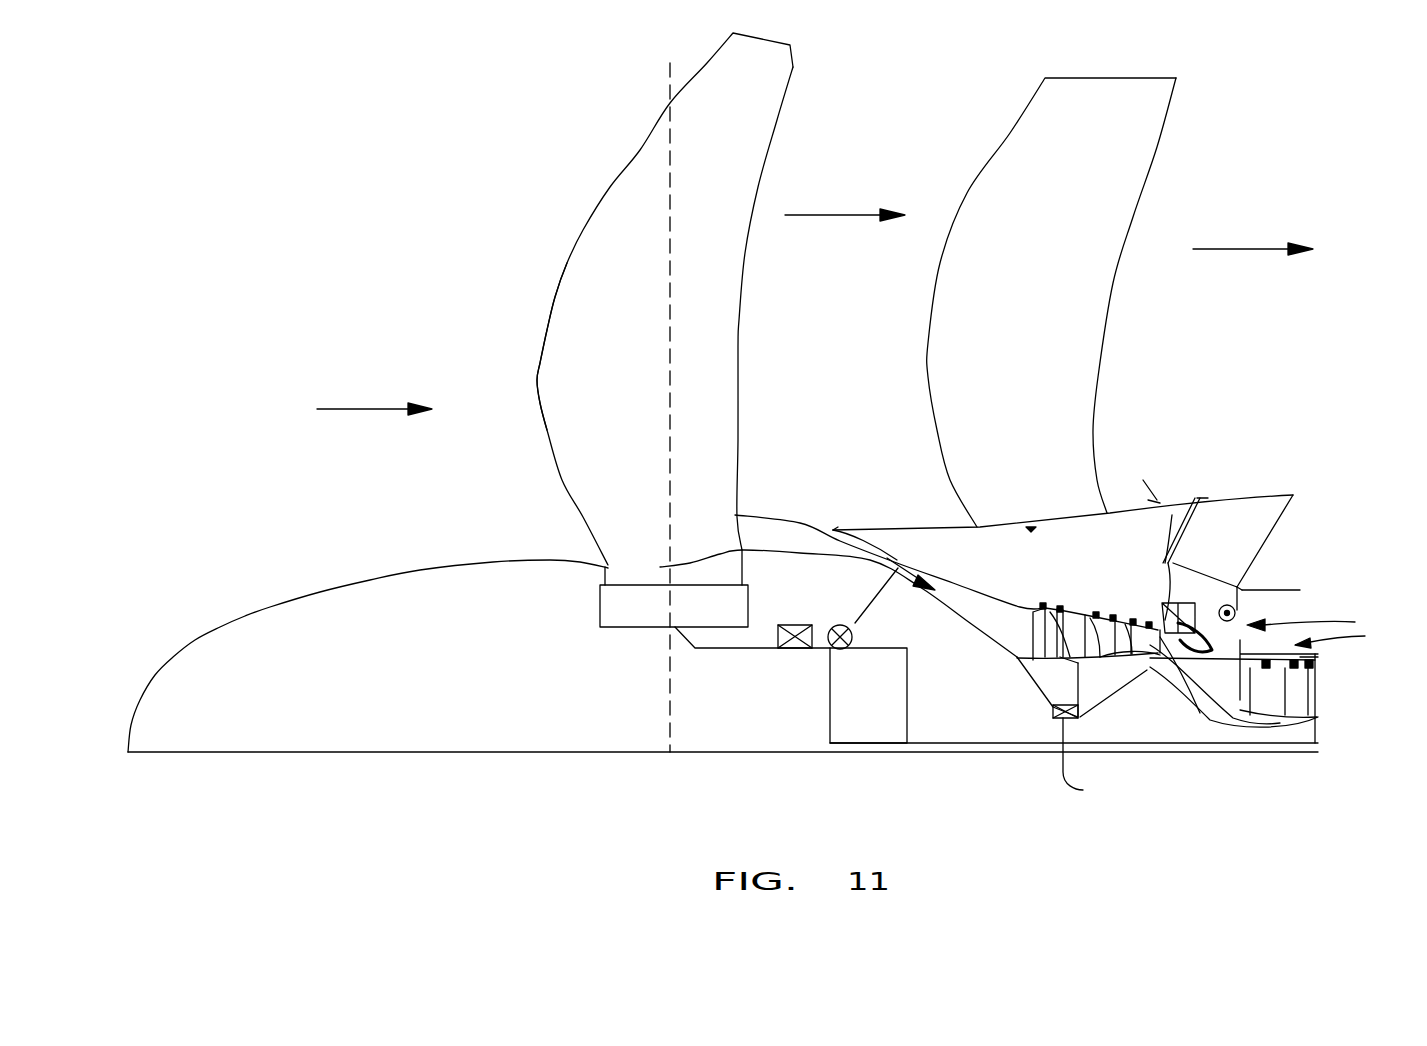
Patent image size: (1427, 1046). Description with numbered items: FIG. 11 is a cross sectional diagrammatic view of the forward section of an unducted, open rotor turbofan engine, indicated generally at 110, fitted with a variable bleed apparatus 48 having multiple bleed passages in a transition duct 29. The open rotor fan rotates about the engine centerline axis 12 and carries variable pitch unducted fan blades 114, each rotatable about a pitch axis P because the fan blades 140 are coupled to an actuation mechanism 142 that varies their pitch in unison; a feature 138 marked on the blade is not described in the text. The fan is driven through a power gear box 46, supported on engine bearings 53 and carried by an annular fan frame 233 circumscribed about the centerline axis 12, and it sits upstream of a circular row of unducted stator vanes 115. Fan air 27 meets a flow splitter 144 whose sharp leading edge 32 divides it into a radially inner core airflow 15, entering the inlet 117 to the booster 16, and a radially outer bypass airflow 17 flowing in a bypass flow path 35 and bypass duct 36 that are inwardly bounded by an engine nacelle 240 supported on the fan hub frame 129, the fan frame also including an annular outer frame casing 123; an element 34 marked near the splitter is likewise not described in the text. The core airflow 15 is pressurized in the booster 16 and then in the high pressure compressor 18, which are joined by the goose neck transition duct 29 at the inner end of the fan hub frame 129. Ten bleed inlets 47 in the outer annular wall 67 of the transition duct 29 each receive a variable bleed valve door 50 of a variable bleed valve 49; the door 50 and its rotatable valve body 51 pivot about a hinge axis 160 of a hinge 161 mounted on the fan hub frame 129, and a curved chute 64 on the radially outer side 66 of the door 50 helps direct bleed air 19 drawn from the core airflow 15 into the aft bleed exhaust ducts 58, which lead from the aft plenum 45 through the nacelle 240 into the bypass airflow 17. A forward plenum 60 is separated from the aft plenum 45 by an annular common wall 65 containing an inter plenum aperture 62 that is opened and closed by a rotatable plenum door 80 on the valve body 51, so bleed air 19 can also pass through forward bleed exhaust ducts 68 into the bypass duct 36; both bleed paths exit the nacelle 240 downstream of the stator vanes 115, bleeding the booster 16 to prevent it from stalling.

The engine centerline axis 12 is at (840, 752).
The core airflow 15 is at (893, 568).
The booster 16 is at (1050, 668).
The bypass airflow 17 is at (860, 215).
The high pressure compressor 18 is at (1348, 642).
The bleed air 19 is at (1197, 713).
The fan air 27 is at (360, 410).
The transition duct 29 is at (1309, 741).
The sharp leading edge 32 is at (833, 530).
The core inlet 34 is at (848, 527).
The bypass flow path 35 is at (1085, 302).
The bypass duct 36 is at (1150, 680).
The aft plenum 45 is at (1173, 550).
The power gear box 46 is at (907, 688).
The bleed inlets 47 is at (1115, 692).
The variable bleed apparatus 48 is at (1317, 619).
The variable bleed valve 49 is at (1197, 597).
The variable bleed valve door 50 is at (1187, 680).
The rotatable valve body 51 is at (1202, 577).
The engine bearings 53 is at (795, 650).
The aft bleed exhaust ducts 58 is at (1272, 502).
The forward plenum 60 is at (1085, 578).
The inter plenum aperture 62 is at (1125, 567).
The chute 64 is at (1235, 613).
The annular common wall 65 is at (1115, 592).
The radially outer side 66 is at (1243, 642).
The outer annular wall 67 is at (1205, 700).
The forward bleed exhaust ducts 68 is at (1172, 515).
The rotatable plenum door 80 is at (1173, 587).
The gas turbine engine 110 is at (515, 812).
The variable pitch unducted fan blades 114 is at (662, 178).
The unducted stator vanes 115 is at (1158, 145).
The inlet 117 is at (738, 517).
The annular outer frame casing 123 is at (1200, 498).
The fan hub frame 129 is at (1317, 657).
The fan blade leading edge 138 is at (583, 228).
The fan blades 140 is at (629, 299).
The actuation mechanism 142 is at (600, 607).
The flow splitter 144 is at (933, 527).
The hinge axis 160 is at (1238, 587).
The hinge 161 is at (1238, 587).
The annular fan frame 233 is at (1296, 589).
The engine nacelle 240 is at (1148, 500).
The pitch axis P is at (670, 97).